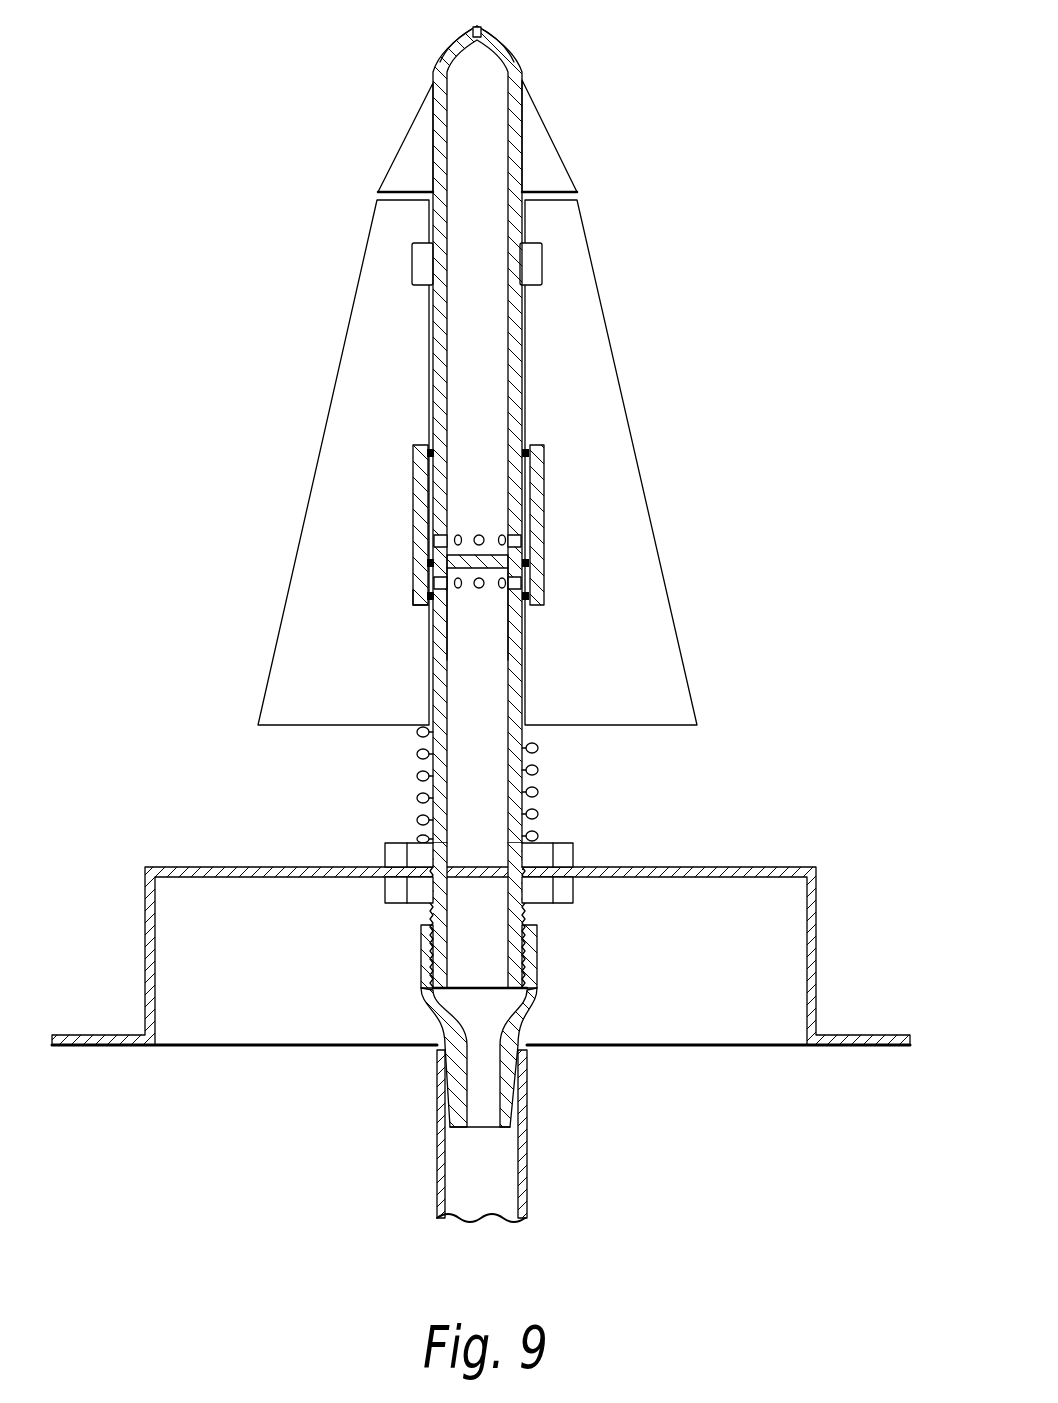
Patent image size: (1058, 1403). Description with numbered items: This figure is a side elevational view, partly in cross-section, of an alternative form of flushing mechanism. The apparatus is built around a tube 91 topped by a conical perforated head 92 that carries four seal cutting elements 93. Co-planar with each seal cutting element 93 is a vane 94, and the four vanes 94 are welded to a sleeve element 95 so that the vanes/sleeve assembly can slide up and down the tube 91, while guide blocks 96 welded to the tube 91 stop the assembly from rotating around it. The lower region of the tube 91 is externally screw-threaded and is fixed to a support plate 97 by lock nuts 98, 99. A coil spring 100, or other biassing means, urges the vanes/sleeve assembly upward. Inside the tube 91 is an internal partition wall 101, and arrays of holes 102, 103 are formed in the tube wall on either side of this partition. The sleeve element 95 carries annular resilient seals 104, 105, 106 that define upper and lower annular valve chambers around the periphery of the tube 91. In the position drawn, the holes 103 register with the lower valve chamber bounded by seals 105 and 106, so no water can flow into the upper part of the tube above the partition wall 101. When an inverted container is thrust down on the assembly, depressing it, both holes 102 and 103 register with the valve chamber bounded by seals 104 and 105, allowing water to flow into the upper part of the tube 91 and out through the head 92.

The tube 91 is at (480, 352).
The conical perforated head 92 is at (488, 34).
The seal cutting elements 93 is at (410, 155).
The vane 94 is at (325, 497).
The sleeve element 95 is at (546, 562).
The guide blocks 96 is at (425, 262).
The support plate 97 is at (718, 868).
The lock nut 98 is at (390, 852).
The lock nut 99 is at (395, 888).
The coil spring 100 is at (543, 792).
The internal partition wall 101 is at (487, 572).
The array of holes 102 is at (482, 533).
The array of holes 103 is at (480, 590).
The annular resilient seal 104 is at (413, 449).
The annular resilient seal 105 is at (413, 565).
The annular resilient seal 106 is at (413, 597).